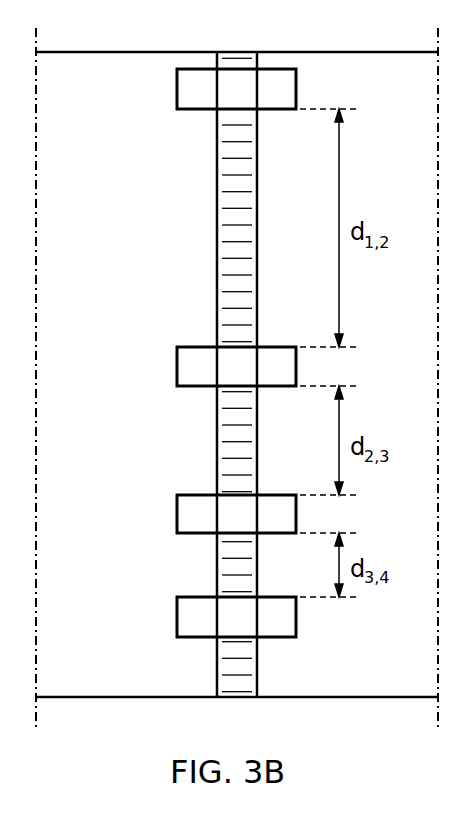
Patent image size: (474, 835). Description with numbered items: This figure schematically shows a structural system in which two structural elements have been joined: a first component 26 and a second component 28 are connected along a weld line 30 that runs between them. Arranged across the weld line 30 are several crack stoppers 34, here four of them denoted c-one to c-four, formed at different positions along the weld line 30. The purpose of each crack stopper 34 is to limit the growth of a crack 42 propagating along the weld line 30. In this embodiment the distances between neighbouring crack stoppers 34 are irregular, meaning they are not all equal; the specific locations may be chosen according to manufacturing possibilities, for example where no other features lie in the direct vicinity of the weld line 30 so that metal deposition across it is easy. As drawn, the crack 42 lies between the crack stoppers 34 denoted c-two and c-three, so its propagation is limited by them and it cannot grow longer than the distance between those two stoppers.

The first component 26 is at (102, 192).
The second component 28 is at (419, 91).
The weld line 30 is at (245, 148).
The crack stopper 34 is at (202, 100).
The crack 42 is at (217, 448).